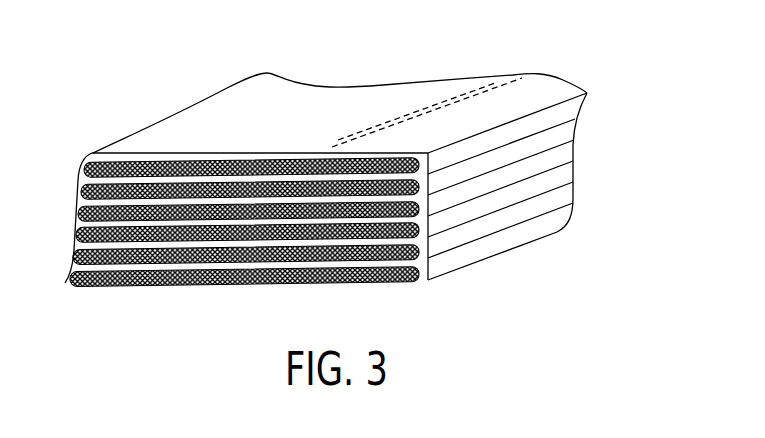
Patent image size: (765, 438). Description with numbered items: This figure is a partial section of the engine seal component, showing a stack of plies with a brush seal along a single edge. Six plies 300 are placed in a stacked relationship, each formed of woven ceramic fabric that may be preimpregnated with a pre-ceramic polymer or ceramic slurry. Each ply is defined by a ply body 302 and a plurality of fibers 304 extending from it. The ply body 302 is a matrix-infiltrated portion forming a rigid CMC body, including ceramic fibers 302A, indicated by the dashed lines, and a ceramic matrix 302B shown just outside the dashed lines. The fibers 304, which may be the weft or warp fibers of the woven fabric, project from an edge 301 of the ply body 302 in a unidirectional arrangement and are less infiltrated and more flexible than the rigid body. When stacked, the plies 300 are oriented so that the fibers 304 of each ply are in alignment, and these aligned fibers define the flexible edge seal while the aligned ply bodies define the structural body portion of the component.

The plies 300 is at (573, 150).
The edge 301 is at (162, 152).
The ply body 302 is at (259, 96).
The ceramic fibers 302A is at (463, 93).
The ceramic matrix 302B is at (502, 80).
The fibers 304 is at (93, 157).